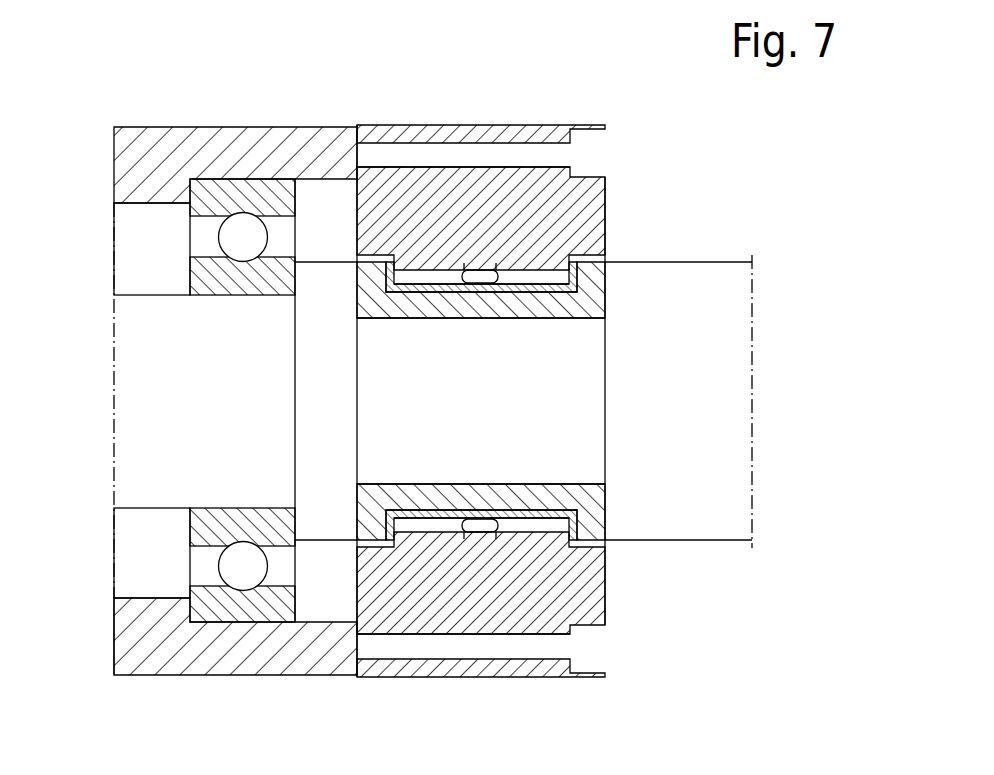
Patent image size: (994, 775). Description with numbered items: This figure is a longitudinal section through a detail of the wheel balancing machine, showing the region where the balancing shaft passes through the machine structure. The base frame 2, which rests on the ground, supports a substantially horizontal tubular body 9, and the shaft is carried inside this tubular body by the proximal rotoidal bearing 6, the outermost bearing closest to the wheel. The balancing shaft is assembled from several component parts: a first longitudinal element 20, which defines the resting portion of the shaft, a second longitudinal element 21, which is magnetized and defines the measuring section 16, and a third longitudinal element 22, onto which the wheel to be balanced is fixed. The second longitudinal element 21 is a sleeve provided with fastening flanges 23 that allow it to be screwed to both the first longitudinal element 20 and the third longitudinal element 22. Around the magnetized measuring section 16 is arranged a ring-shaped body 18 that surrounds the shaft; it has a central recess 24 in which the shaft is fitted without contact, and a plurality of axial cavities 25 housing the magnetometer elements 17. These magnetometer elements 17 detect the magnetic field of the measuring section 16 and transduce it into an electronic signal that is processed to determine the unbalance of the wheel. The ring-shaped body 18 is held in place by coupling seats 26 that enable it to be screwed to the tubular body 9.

The base frame 2 is at (100, 632).
The proximal rotoidal bearing 6 is at (203, 198).
The tubular body 9 is at (167, 152).
The measuring section 16 is at (611, 408).
The magnetometer elements 17 is at (477, 523).
The ring-shaped body 18 is at (565, 190).
The first longitudinal element 20 is at (182, 388).
The second longitudinal element 21 is at (540, 380).
The third longitudinal element 22 is at (708, 412).
The fastening flanges 23 is at (365, 277).
The central recess 24 is at (538, 512).
The axial cavities 25 is at (540, 523).
The coupling seats 26 is at (492, 158).